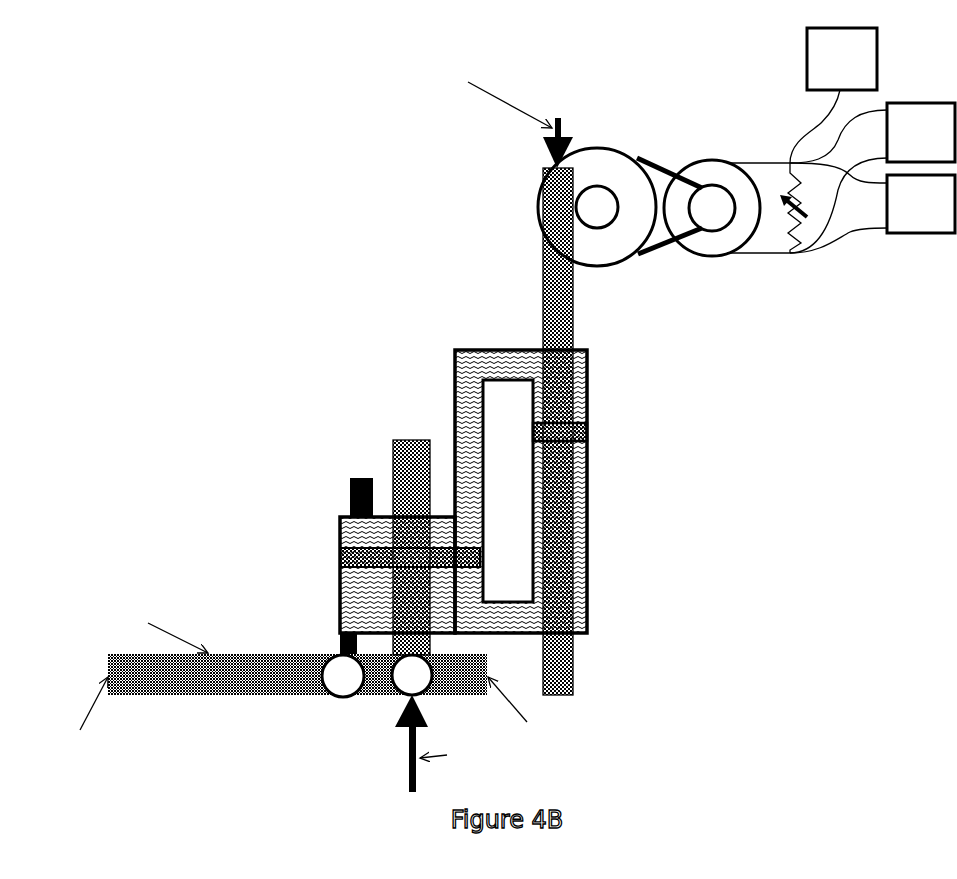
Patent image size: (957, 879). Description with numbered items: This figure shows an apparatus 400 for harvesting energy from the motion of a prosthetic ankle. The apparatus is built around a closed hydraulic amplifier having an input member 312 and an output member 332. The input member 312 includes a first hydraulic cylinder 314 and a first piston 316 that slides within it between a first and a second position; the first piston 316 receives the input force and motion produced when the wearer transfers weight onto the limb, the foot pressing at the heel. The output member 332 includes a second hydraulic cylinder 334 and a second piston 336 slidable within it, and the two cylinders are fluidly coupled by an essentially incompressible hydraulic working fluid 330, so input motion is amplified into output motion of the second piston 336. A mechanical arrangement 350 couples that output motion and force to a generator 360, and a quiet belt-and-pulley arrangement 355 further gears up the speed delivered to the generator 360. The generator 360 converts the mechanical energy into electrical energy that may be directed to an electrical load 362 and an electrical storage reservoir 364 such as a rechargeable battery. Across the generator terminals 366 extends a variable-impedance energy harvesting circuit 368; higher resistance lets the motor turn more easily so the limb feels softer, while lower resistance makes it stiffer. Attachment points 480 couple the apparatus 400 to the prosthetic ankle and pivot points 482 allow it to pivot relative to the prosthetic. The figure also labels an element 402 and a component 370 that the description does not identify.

The apparatus for harvesting energy from motion of a prosthetic ankle 400 is at (327, 325).
The input member 312 is at (258, 493).
The first hydraulic cylinder 314 is at (338, 605).
The first piston 316 is at (418, 470).
The input piston 402 is at (338, 528).
The attachment points 480 is at (345, 487).
The pivot points 482 is at (342, 680).
The hydraulic working fluid 330 is at (577, 472).
The output member 332 is at (648, 513).
The second hydraulic cylinder 334 is at (588, 578).
The second piston 336 is at (557, 275).
The mechanical arrangement 350 is at (573, 227).
The belt-and-pulley arrangement 355 is at (658, 162).
The generator 360 is at (712, 255).
The terminals 366 is at (760, 162).
The variable-impedance energy harvesting circuit 368 is at (798, 235).
The controller 370 is at (833, 95).
The electrical load 362 is at (872, 178).
The electrical storage reservoir 364 is at (872, 208).